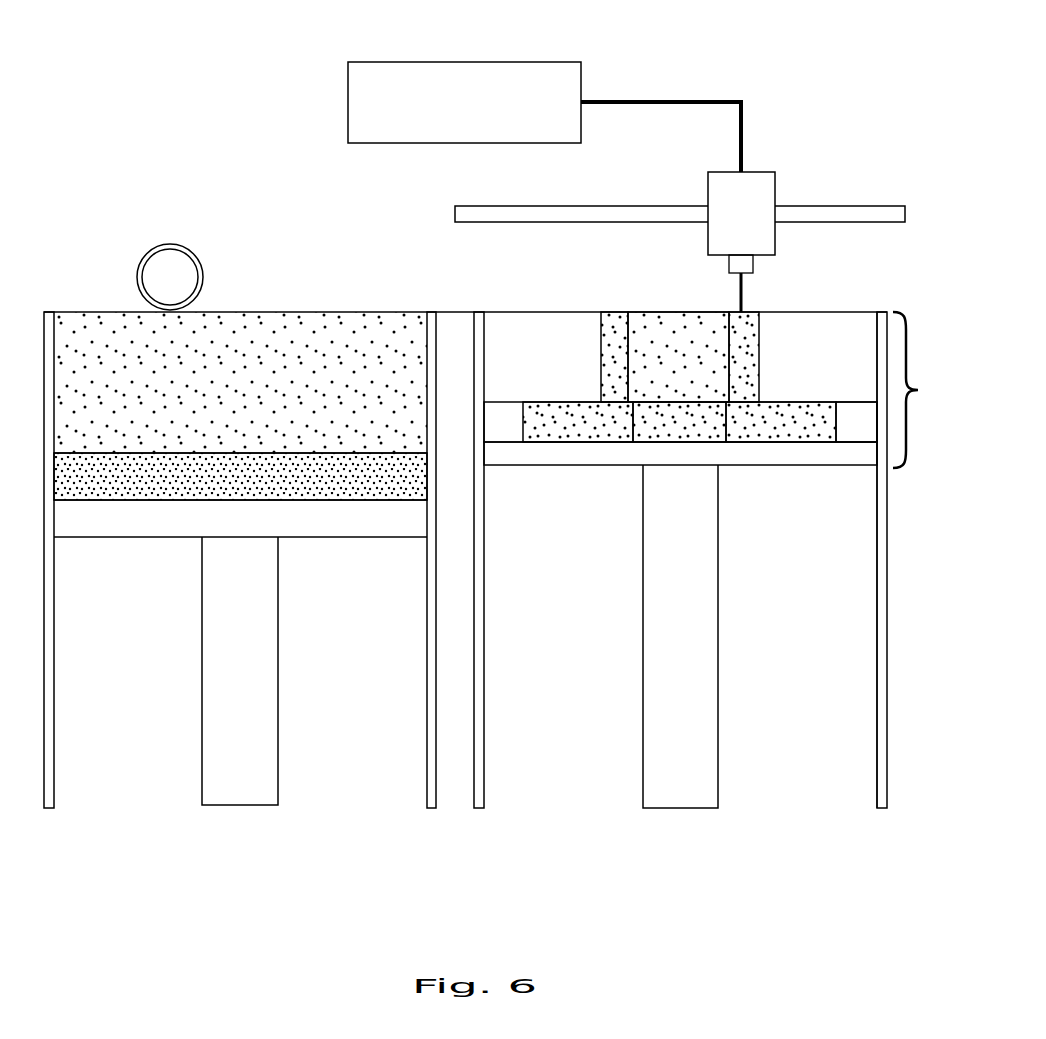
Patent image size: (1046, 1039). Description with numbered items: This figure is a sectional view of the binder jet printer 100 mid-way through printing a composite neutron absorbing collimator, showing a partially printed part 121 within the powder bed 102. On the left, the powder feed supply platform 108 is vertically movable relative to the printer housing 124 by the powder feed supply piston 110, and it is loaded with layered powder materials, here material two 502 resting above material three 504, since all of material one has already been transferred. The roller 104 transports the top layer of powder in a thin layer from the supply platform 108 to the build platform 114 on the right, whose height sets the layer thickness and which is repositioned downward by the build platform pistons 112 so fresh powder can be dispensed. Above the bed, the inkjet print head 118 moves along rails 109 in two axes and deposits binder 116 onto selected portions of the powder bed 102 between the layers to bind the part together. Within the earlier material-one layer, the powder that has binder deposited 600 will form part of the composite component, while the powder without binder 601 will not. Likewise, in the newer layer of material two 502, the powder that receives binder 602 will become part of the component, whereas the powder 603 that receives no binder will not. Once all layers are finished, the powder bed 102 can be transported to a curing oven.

The binder jet printer 100 is at (240, 104).
The powder bed 102 is at (921, 560).
The roller 104 is at (202, 272).
The powder feed supply platform 108 is at (190, 500).
The rails 109 is at (823, 205).
The powder feed supply piston 110 is at (278, 742).
The build platform pistons 112 is at (690, 590).
The build platform 114 is at (748, 465).
The binder feeder 116 is at (457, 80).
The inkjet print head 118 is at (775, 172).
The partially printed part 121 is at (615, 442).
The printer housing 124 is at (877, 730).
The material two 502 is at (137, 372).
The material three 504 is at (138, 500).
The powder that has binder deposited 600 is at (565, 418).
The powder that does not have binder deposited 601 is at (856, 422).
The powder that receives binder 602 is at (606, 352).
The powder that does not have binder deposited 603 is at (810, 338).